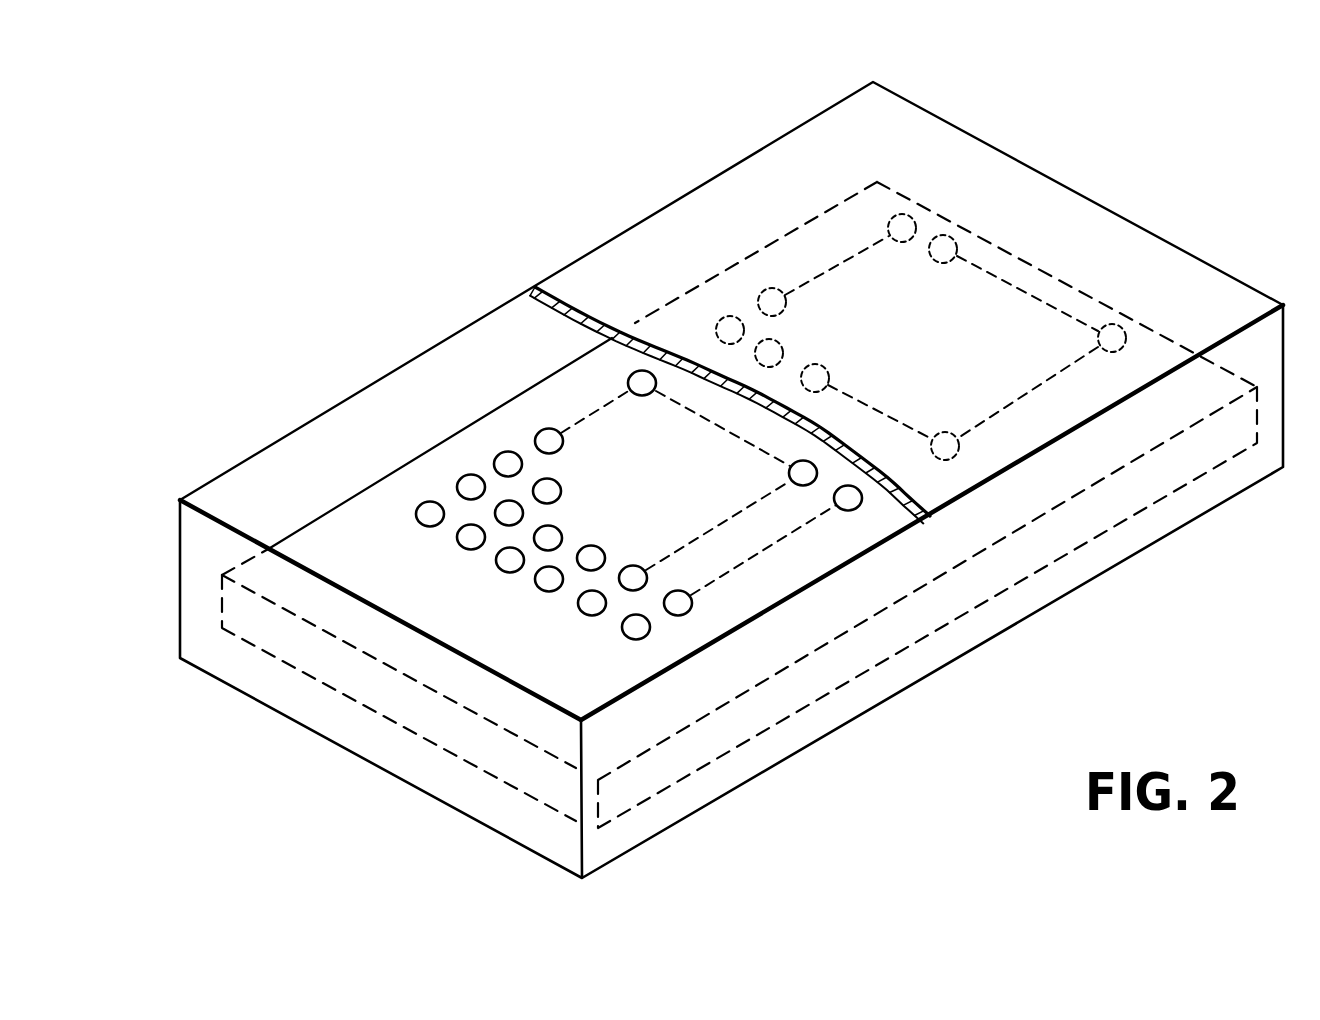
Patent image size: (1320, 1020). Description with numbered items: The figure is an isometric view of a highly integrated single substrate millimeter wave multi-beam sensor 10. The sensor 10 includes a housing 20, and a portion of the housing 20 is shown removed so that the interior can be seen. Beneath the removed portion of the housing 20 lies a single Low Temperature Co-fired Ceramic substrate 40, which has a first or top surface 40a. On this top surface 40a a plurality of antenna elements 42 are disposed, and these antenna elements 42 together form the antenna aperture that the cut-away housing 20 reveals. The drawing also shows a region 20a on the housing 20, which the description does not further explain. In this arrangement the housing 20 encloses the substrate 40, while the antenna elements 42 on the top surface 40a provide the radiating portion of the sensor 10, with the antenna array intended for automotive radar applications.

The sensor 10 is at (1070, 145).
The housing 20 is at (713, 178).
The cover plate pattern region 20a is at (941, 352).
The Low Temperature Co-fired Ceramic (LTCC) substrate 40 is at (673, 770).
The top surface 40a is at (366, 564).
The antenna elements 42 is at (629, 673).